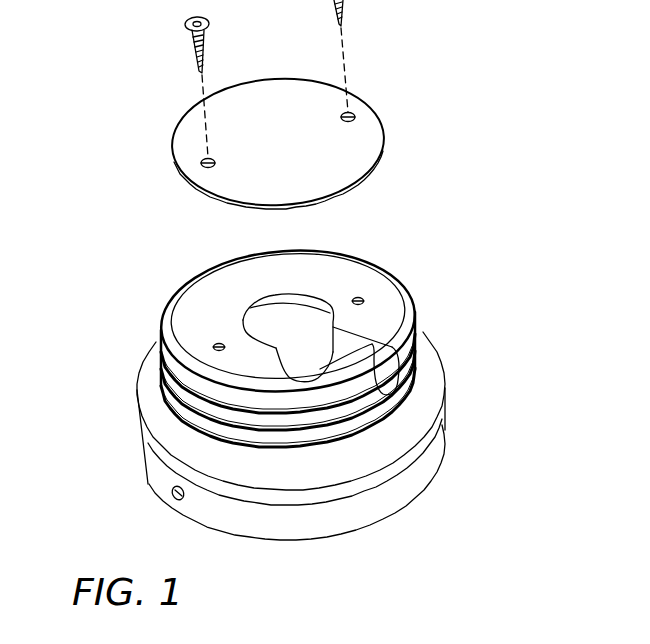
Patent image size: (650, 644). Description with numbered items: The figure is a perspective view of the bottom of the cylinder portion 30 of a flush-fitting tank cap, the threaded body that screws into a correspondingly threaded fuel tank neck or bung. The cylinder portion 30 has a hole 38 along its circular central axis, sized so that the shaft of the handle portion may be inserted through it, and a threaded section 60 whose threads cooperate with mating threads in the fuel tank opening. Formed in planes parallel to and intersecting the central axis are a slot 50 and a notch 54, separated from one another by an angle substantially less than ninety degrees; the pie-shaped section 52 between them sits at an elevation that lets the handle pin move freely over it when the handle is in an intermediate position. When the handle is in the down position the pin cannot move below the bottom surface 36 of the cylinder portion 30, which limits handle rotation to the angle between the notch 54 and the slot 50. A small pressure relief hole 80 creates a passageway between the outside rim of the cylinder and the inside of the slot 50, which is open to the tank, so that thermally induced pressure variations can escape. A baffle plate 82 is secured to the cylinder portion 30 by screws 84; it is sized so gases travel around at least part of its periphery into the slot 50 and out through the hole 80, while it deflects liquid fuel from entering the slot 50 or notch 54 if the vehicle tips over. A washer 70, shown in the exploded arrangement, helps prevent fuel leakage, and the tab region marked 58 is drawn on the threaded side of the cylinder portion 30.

The cylinder portion 30 is at (450, 306).
The bottom surface 36 is at (338, 390).
The hole 38 is at (312, 318).
The slot 50 is at (414, 378).
The pie-shaped section 52 is at (316, 370).
The notch 54 is at (310, 380).
The thread 58 is at (398, 408).
The threaded section 60 is at (392, 347).
The washer 70 is at (240, 434).
The pressure relief hole 80 is at (172, 498).
The baffle plate 82 is at (247, 110).
The screws 84 is at (193, 48).